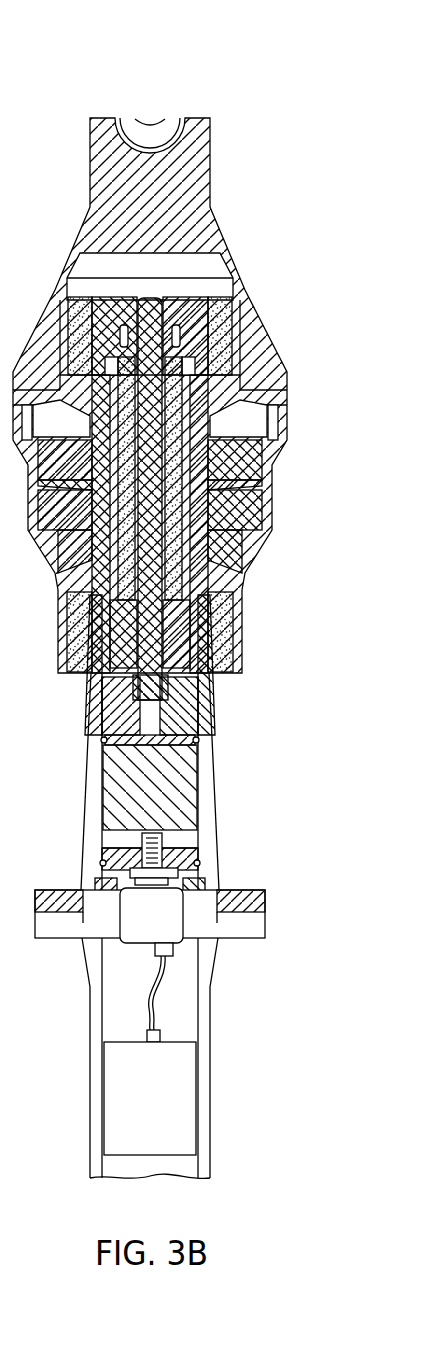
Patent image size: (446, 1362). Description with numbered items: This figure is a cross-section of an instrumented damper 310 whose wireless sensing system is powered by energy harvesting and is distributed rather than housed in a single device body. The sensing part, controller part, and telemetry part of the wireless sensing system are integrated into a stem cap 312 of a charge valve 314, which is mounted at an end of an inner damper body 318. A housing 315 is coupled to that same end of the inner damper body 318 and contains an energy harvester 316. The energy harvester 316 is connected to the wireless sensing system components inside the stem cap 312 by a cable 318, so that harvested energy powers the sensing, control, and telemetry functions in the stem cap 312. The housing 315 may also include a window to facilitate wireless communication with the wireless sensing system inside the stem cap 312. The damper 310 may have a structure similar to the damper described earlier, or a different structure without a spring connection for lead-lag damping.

The damper 310 is at (161, 103).
The stem cap 312 is at (171, 932).
The charge valve 314 is at (156, 855).
The housing 315 is at (97, 1103).
The energy harvester 316 is at (172, 1113).
The inner damper body / cable 318 is at (103, 862).